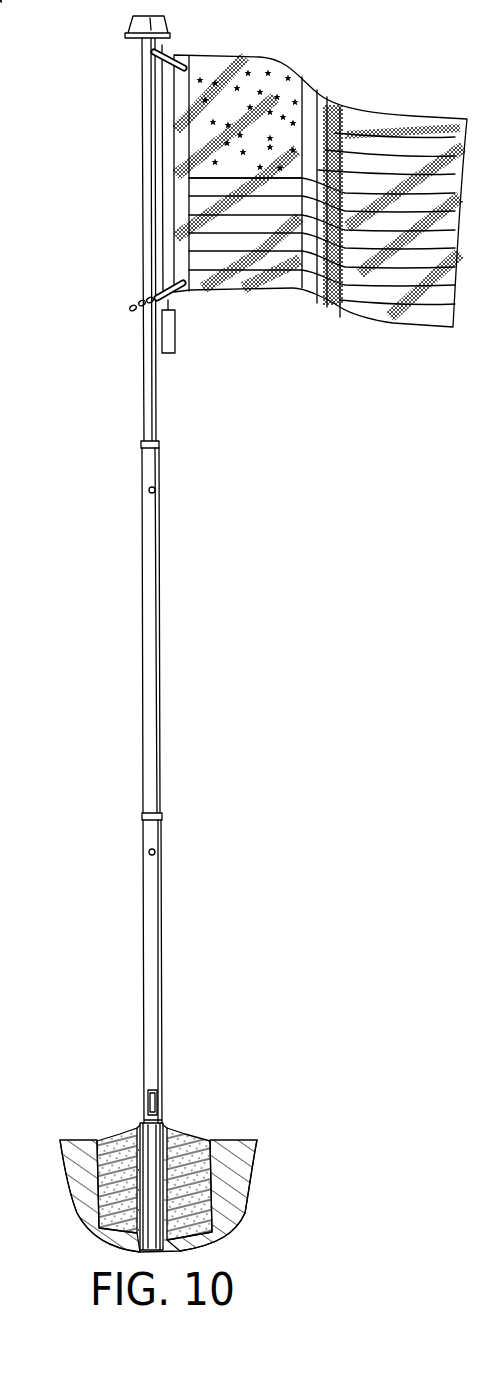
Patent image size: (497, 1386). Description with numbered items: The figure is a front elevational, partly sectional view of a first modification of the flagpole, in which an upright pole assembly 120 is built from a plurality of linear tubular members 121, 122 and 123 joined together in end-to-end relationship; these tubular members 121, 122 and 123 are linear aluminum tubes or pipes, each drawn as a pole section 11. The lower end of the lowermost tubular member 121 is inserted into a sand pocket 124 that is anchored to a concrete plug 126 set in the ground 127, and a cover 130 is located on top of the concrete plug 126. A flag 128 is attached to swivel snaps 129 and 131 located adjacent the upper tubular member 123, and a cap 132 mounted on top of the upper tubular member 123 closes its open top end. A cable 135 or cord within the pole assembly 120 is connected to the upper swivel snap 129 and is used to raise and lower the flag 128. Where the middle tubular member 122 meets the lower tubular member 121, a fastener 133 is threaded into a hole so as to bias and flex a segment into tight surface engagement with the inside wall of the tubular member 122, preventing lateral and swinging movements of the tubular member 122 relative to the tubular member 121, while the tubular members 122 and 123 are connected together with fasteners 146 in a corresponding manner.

The pole tube section 11 is at (164, 785).
The upright pole assembly 120 is at (204, 569).
The tubular member 121 is at (165, 903).
The tubular member 122 is at (165, 658).
The tubular member 123 is at (142, 202).
The sand pocket 124 is at (173, 1135).
The concrete plug 126 is at (112, 1137).
The ground 127 is at (245, 1150).
The flag 128 is at (413, 116).
The swivel snap 129 is at (176, 58).
The cover 130 is at (163, 1123).
The swivel snap 131 is at (157, 293).
The cap 132 is at (127, 34).
The fastener 133 is at (156, 852).
The cable 135 is at (160, 147).
The fasteners 146 is at (156, 490).